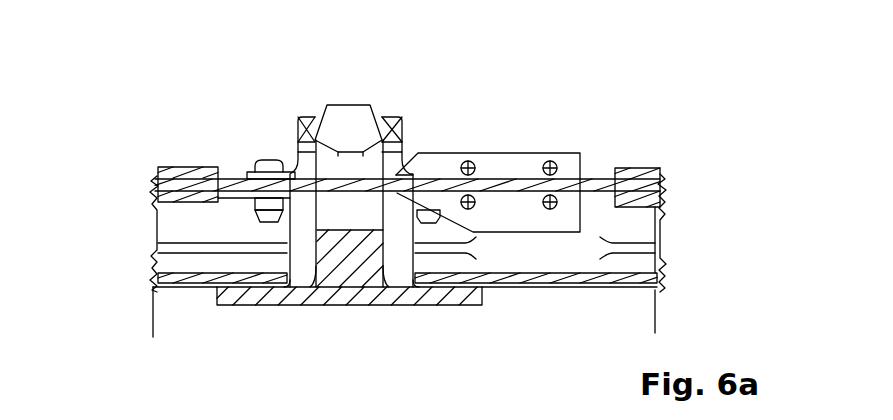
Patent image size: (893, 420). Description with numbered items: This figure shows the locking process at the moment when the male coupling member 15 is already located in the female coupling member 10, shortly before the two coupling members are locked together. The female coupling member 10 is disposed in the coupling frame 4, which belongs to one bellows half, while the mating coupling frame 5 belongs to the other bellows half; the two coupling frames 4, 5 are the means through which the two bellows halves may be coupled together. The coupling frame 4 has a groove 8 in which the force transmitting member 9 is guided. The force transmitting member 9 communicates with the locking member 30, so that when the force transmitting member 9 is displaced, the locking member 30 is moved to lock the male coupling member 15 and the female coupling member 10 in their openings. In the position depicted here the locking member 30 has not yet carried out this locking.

The coupling frame 4 is at (664, 168).
The coupling frame 5 is at (147, 317).
The groove 8 is at (618, 228).
The force transmitting member 9 is at (590, 177).
The female coupling member 10 is at (405, 103).
The male coupling member 15 is at (357, 297).
The locking member 30 is at (512, 155).